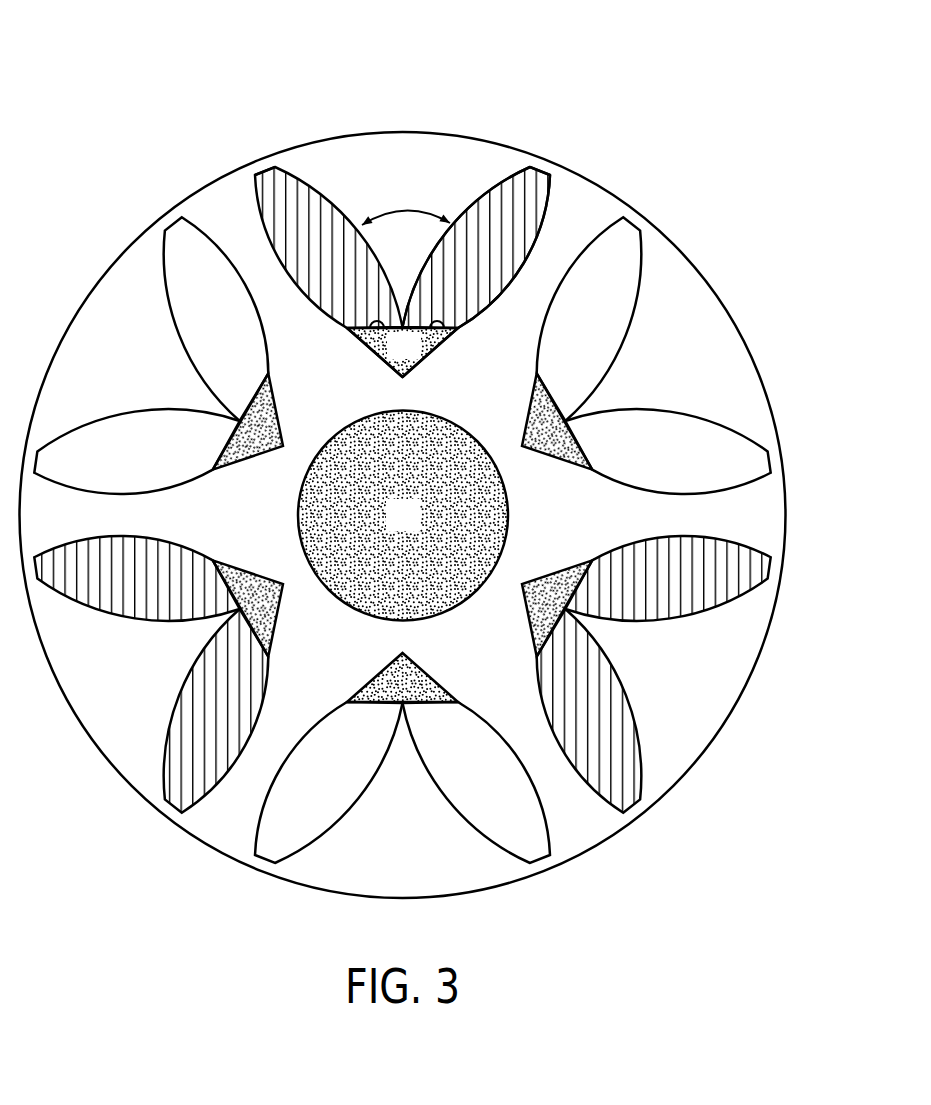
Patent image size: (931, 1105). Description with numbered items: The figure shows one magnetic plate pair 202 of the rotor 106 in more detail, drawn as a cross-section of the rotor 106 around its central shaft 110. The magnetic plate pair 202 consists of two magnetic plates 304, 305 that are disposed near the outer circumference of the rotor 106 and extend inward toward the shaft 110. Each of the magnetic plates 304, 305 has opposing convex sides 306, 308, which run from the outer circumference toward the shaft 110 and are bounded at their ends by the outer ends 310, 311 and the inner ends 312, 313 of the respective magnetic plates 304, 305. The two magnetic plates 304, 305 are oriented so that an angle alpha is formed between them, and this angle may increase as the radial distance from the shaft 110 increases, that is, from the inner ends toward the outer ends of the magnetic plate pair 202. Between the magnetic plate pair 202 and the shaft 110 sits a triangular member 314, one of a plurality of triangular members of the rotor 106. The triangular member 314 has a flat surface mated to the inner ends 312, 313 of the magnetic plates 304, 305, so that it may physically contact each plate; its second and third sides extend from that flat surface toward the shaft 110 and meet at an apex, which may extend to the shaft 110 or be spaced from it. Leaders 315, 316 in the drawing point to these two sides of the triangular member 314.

The rotor 106 is at (357, 137).
The shaft 110 is at (418, 529).
The magnetic plate pair 202 is at (434, 249).
The magnetic plate 304 is at (490, 276).
The magnetic plate 305 is at (343, 269).
The convex side 306 is at (510, 177).
The convex side 308 is at (547, 193).
The outer end 310 is at (540, 160).
The outer end 311 is at (263, 172).
The inner end 312 is at (455, 335).
The inner end 313 is at (362, 335).
The triangular member 314 is at (419, 358).
The side of flux barrier 315 is at (417, 367).
The side of flux barrier 316 is at (392, 367).